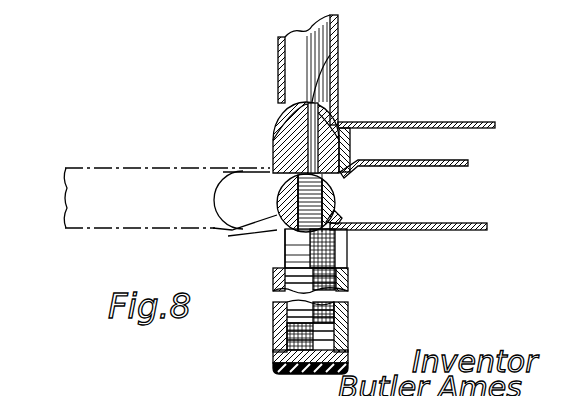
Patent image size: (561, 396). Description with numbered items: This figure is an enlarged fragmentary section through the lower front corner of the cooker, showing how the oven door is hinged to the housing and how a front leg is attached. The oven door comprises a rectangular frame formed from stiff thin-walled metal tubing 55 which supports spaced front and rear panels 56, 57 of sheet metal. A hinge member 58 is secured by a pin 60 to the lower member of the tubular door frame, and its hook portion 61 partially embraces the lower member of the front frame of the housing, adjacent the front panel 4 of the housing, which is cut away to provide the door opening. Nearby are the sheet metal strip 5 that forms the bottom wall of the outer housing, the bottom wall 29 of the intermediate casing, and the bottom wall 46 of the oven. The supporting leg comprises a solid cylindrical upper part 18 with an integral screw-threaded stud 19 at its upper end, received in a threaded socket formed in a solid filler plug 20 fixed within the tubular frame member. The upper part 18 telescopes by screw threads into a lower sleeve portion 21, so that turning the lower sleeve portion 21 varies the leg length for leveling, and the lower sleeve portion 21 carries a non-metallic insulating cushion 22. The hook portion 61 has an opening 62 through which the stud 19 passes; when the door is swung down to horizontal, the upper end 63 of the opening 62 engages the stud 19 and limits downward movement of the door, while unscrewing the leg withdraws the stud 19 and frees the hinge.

The front panel 4 is at (351, 150).
The single length of sheet metal 5 is at (422, 232).
The upper part of leg 18 is at (334, 250).
The screw-threaded stud 19 is at (279, 233).
The filler plug 20 is at (333, 189).
The lower sleeve portion 21 is at (273, 330).
The insulating cushion 22 is at (276, 369).
The bottom wall 29 is at (440, 155).
The bottom wall 46 is at (425, 122).
The metal tubing 55 is at (288, 62).
The front panel 56 is at (279, 43).
The rear panel 57 is at (339, 47).
The hinge member 58 is at (275, 128).
The pin 60 is at (339, 102).
The hook portion 61 is at (341, 217).
The opening 62 is at (232, 234).
The upper end of opening 63 is at (167, 198).